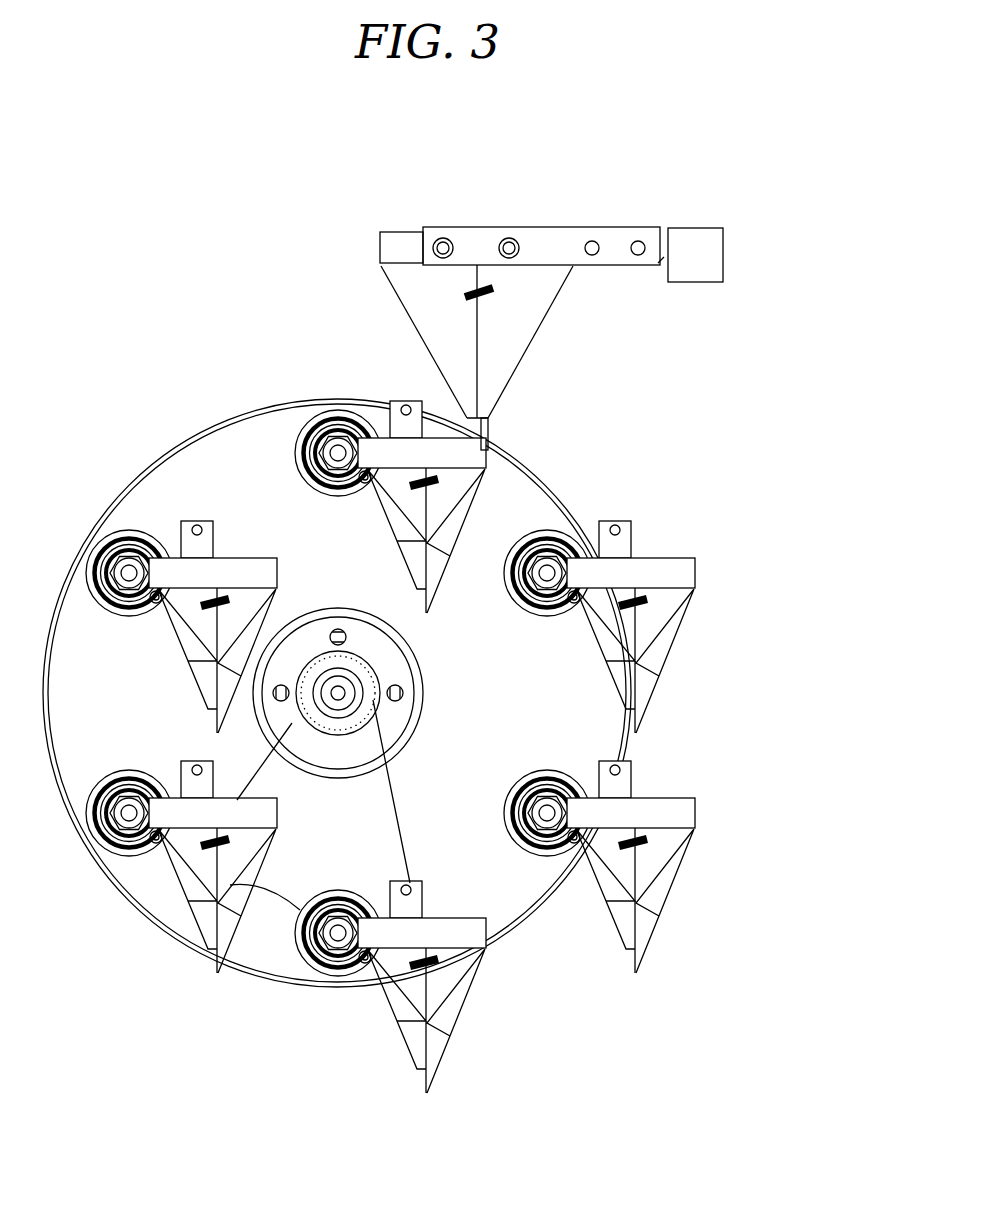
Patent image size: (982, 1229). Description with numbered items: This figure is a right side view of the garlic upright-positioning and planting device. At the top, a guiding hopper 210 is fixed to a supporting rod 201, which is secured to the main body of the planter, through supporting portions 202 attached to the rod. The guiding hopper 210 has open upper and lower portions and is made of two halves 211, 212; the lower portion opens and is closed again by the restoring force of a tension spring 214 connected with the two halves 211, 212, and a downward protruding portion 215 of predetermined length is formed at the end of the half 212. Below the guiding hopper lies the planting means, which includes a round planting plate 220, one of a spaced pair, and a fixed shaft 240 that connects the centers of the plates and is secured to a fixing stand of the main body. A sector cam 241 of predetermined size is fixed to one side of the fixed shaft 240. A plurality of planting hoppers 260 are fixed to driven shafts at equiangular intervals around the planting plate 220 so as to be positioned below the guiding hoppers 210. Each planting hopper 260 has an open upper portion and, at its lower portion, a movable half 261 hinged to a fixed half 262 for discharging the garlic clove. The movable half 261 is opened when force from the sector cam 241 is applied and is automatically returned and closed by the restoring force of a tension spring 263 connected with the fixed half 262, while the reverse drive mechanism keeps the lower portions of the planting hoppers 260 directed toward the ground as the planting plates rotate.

The supporting rod 201 is at (686, 240).
The supporting portions 202 is at (552, 240).
The guiding hopper 210 is at (485, 301).
The half 211 is at (445, 357).
The half 212 is at (530, 298).
The tension spring 214 is at (496, 290).
The downward protruding portion 215 is at (488, 422).
The planting plate 220 is at (148, 453).
The fixed shaft 240 is at (380, 703).
The sector cam 241 is at (287, 892).
The planting hopper 260 is at (659, 871).
The movable half 261 is at (603, 878).
The fixed half 262 is at (678, 855).
The tension spring 263 is at (640, 843).